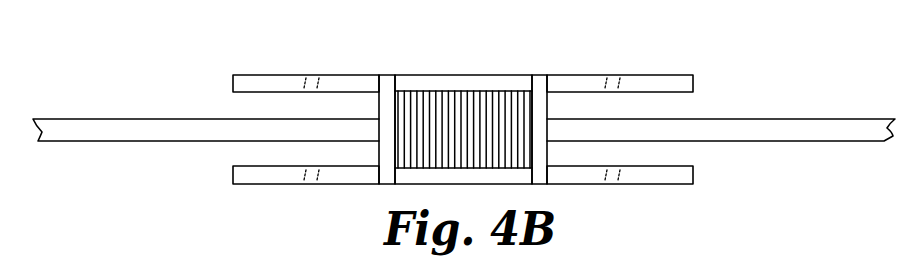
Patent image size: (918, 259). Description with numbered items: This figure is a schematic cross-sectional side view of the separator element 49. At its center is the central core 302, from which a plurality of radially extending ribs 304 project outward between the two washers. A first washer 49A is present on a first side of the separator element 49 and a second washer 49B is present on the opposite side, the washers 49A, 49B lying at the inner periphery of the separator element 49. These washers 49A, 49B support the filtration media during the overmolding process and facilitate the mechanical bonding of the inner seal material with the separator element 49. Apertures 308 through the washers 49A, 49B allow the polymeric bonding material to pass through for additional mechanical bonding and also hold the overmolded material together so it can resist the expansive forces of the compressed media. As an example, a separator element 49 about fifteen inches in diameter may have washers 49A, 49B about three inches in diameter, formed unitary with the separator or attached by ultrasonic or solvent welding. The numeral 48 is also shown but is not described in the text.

The separator element 49 is at (504, 132).
The first washer 49A is at (268, 75).
The second washer 49B is at (258, 184).
The coil 48 is at (424, 108).
The central core 302 is at (528, 113).
The radially extending ribs 304 is at (822, 132).
The apertures 308 is at (310, 82).